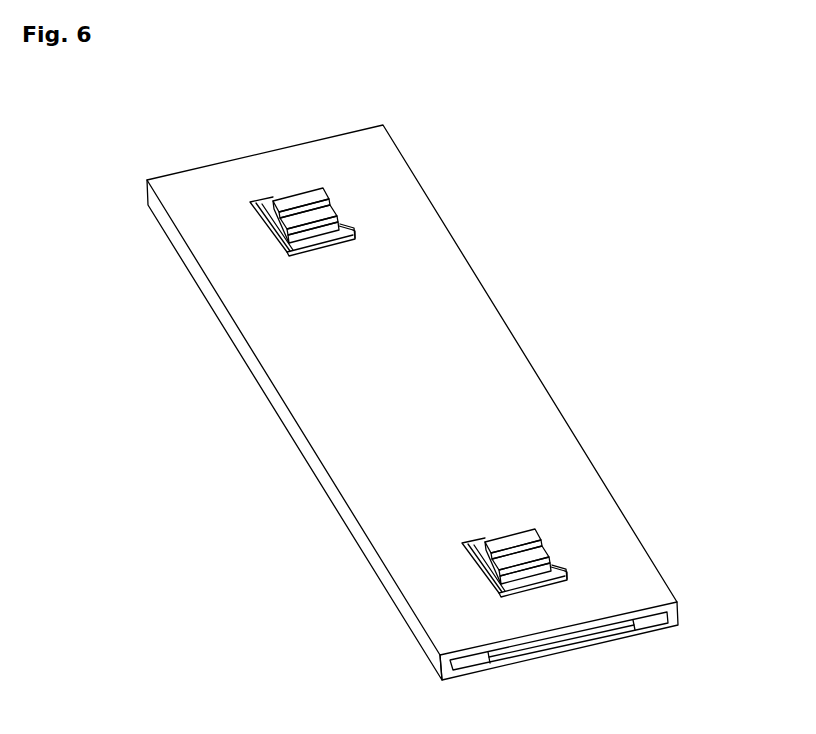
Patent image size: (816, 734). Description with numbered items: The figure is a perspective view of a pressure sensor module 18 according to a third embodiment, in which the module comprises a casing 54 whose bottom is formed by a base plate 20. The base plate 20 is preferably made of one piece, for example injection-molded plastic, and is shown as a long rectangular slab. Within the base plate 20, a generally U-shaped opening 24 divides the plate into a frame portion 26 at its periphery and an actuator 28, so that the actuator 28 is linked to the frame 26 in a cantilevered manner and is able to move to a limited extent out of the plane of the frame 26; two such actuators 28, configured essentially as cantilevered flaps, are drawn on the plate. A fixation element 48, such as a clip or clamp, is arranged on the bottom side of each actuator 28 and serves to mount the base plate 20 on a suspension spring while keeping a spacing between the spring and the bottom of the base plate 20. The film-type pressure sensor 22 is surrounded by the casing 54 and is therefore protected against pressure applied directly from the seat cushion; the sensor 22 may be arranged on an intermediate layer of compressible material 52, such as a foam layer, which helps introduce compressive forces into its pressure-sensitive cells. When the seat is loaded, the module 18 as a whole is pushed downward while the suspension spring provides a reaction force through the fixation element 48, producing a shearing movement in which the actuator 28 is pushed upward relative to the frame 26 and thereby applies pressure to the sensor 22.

The pressure sensor module 18 is at (542, 275).
The base plate 20 is at (443, 212).
The film-type pressure sensor 22 is at (607, 632).
The U-shaped opening 24 is at (330, 237).
The frame portion 26 is at (513, 373).
The actuator 28 is at (277, 237).
The fixation element 48 is at (305, 195).
The intermediate layer of compressible material 52 is at (632, 619).
The casing 54 is at (367, 560).